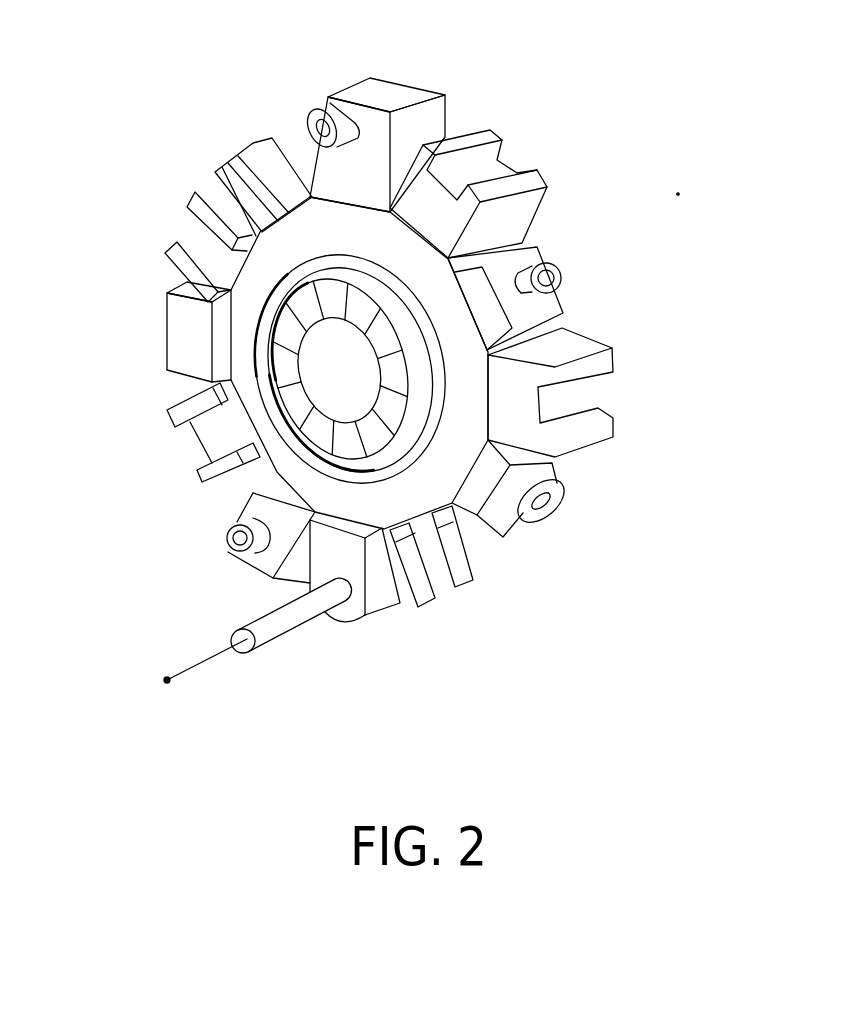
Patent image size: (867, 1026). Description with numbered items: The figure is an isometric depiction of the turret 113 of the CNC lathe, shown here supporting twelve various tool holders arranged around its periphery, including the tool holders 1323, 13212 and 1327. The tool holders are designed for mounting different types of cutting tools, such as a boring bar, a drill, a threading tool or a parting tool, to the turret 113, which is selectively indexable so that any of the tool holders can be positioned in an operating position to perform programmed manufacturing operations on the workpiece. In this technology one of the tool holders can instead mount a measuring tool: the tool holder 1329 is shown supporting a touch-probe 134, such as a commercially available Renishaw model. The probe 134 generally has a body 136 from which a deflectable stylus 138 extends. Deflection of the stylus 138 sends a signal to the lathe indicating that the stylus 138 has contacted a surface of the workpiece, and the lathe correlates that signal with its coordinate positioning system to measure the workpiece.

The turret 113 is at (290, 243).
The tool holder 1323 is at (371, 113).
The tool holder 13212 is at (625, 392).
The tool holder 1327 is at (179, 440).
The tool holder 1329 is at (414, 608).
The touch-probe 134 is at (194, 648).
The body 136 is at (288, 622).
The deflectable stylus 138 is at (192, 672).